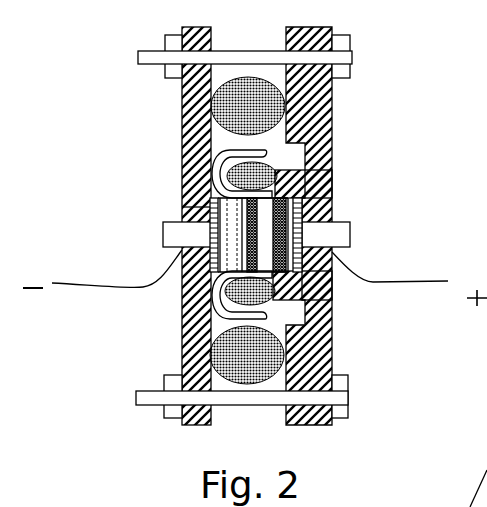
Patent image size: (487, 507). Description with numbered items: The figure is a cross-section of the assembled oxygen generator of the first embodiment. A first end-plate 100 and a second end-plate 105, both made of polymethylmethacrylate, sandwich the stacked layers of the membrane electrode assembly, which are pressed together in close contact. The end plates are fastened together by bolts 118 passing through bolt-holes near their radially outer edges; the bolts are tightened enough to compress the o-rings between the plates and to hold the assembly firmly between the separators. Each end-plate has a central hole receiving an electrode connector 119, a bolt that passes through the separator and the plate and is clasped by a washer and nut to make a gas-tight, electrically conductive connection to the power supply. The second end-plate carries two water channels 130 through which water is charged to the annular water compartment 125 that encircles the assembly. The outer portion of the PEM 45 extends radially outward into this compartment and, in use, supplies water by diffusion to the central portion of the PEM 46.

The first end-plate 100 is at (170, 109).
The second end-plate 105 is at (344, 117).
The bolts 118 is at (366, 58).
The electrode connector 119 is at (156, 241).
The water channels 130 is at (305, 159).
The outer portion of the PEM 45 is at (220, 160).
The annular water compartment 125 is at (215, 328).
The central portion of the PEM 46 is at (262, 227).